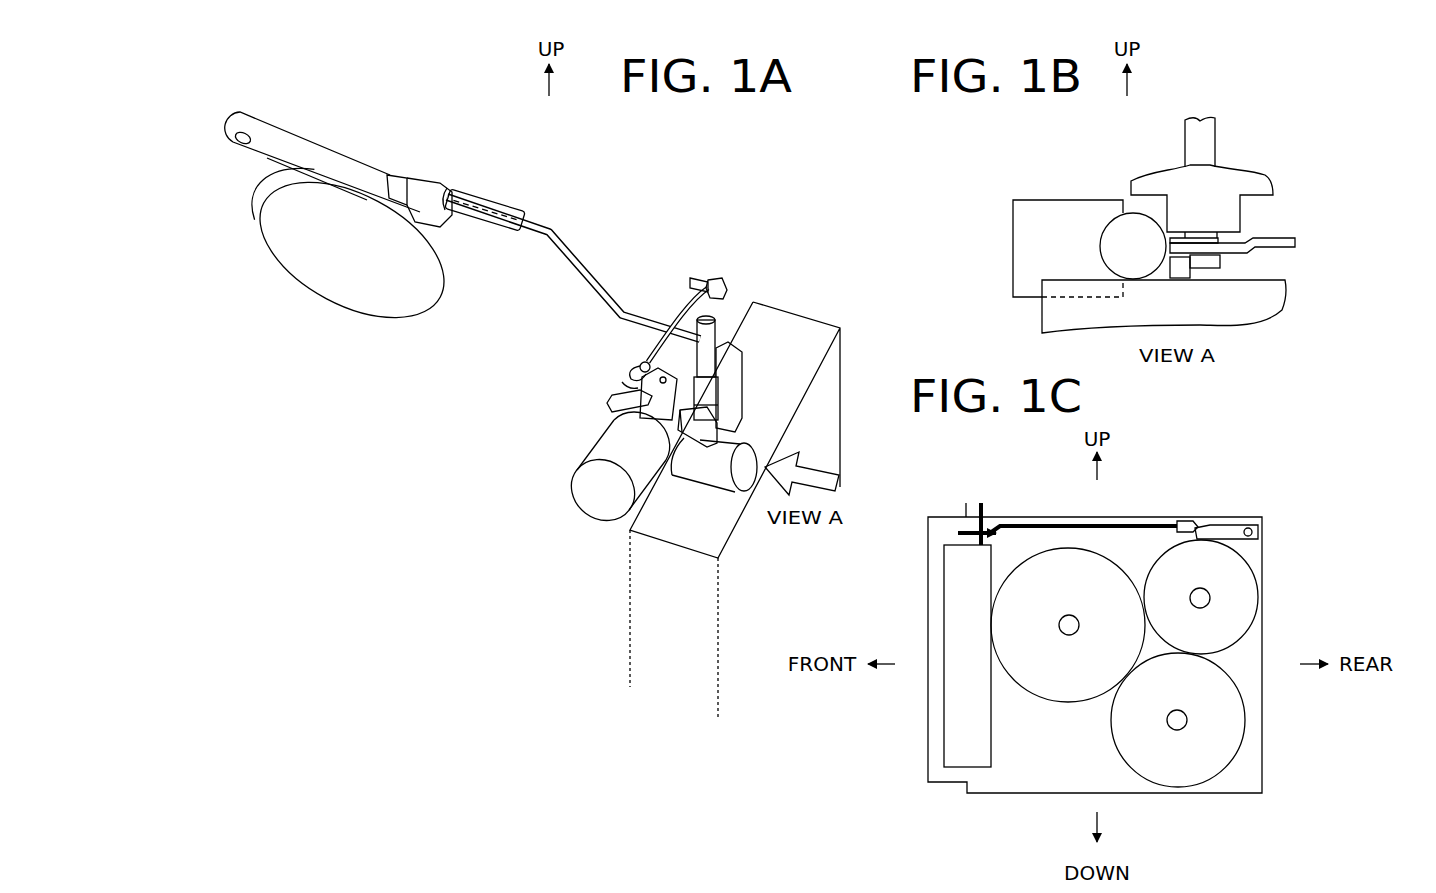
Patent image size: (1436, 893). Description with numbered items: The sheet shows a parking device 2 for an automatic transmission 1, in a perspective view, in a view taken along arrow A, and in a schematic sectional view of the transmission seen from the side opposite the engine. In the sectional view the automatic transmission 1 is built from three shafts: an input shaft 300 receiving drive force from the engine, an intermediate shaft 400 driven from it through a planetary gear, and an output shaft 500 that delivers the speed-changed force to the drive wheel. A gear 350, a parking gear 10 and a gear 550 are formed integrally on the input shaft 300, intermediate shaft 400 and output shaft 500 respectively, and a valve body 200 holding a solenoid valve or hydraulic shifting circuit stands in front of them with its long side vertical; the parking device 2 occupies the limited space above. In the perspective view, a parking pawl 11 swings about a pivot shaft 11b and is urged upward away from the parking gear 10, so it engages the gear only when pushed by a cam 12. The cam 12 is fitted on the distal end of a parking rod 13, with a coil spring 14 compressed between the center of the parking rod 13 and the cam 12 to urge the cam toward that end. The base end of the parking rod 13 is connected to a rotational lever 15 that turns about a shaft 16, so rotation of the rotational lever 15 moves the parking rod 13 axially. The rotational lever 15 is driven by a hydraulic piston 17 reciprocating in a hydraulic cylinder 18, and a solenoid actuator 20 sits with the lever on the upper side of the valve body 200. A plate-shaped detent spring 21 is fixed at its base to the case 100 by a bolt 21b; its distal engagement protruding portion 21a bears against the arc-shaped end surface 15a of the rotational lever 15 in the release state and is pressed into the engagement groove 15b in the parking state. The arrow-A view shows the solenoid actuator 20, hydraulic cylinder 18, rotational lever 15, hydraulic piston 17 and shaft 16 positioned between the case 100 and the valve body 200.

In FIG. 1A, the automatic transmission 1 is at (298, 79).
In FIG. 1C, the automatic transmission 1 is at (1228, 517).
In FIG. 1A, the parking device 2 is at (270, 109).
In FIG. 1C, the parking device 2 is at (948, 489).
In FIG. 1A, the parking gear 10 is at (278, 247).
In FIG. 1C, the parking gear 10 is at (1163, 554).
In FIG. 1A, the parking pawl 11 is at (295, 152).
In FIG. 1C, the parking pawl 11 is at (1246, 524).
In FIG. 1A, the pivot shaft 11b is at (234, 141).
In FIG. 1A, the cam 12 is at (437, 185).
In FIG. 1C, the cam 12 is at (1187, 520).
In FIG. 1A, the parking rod 13 is at (560, 243).
In FIG. 1C, the parking rod 13 is at (1128, 522).
In FIG. 1A, the coil spring 14 is at (483, 200).
In FIG. 1A, the rotational lever 15 is at (655, 342).
In FIG. 1B, the rotational lever 15 is at (1283, 243).
In FIG. 1C, the rotational lever 15 is at (1003, 535).
In FIG. 1A, the end surface 15a is at (628, 386).
In FIG. 1A, the engagement groove 15b is at (645, 366).
In FIG. 1A, the shaft 16 is at (708, 355).
In FIG. 1B, the shaft 16 is at (1216, 144).
In FIG. 1C, the shaft 16 is at (981, 503).
In FIG. 1A, the hydraulic piston 17 is at (610, 396).
In FIG. 1B, the hydraulic piston 17 is at (1221, 262).
In FIG. 1A, the hydraulic cylinder 18 is at (592, 441).
In FIG. 1B, the hydraulic cylinder 18 is at (1013, 246).
In FIG. 1A, the solenoid actuator 20 is at (735, 445).
In FIG. 1B, the solenoid actuator 20 is at (1128, 214).
In FIG. 1A, the detent spring 21 is at (633, 300).
In FIG. 1A, the engagement protruding portion 21a is at (630, 376).
In FIG. 1A, the bolt 21b is at (720, 282).
In FIG. 1B, the case 100 is at (1275, 188).
In FIG. 1C, the case 100 is at (1005, 517).
In FIG. 1A, the valve body 200 is at (800, 310).
In FIG. 1B, the valve body 200 is at (1042, 323).
In FIG. 1C, the valve body 200 is at (955, 629).
In FIG. 1C, the input shaft 300 is at (1068, 645).
In FIG. 1C, the gear 350 is at (1063, 703).
In FIG. 1C, the intermediate shaft 400 is at (1199, 607).
In FIG. 1C, the output shaft 500 is at (1141, 720).
In FIG. 1C, the gear 550 is at (1172, 727).